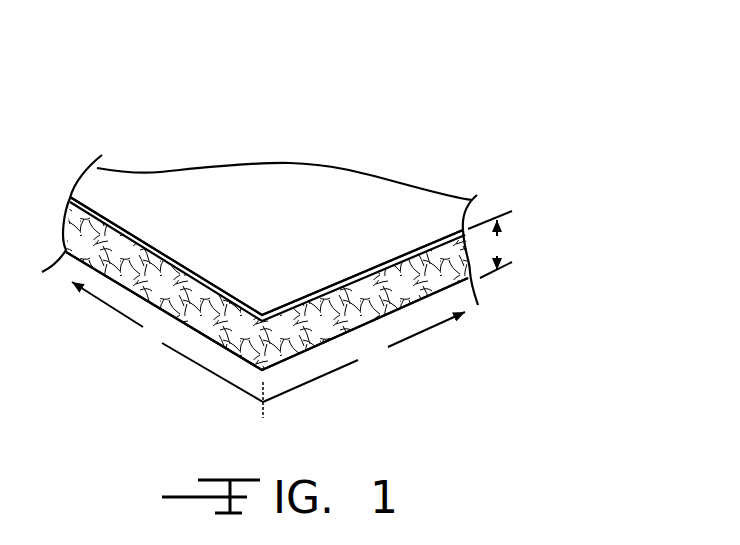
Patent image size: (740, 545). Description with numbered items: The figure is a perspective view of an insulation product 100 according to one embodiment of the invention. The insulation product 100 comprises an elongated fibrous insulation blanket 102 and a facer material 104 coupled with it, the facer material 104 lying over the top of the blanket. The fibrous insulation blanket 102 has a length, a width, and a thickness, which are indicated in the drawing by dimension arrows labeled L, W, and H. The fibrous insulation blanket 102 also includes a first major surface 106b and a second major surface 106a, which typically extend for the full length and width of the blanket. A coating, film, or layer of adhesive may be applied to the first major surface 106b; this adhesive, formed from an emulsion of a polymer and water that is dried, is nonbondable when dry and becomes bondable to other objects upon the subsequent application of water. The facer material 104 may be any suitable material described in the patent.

The insulation product 100 is at (322, 245).
The fibrous insulation blanket 102 is at (475, 280).
The facer material 104 is at (343, 208).
The second major surface 106a is at (222, 208).
The first major surface 106b is at (182, 368).